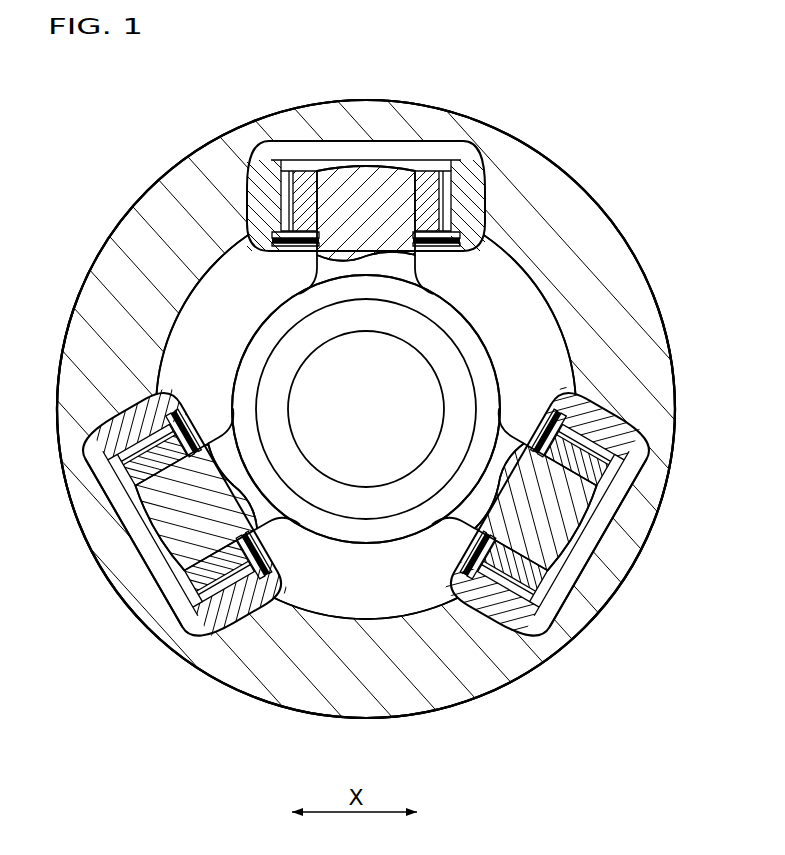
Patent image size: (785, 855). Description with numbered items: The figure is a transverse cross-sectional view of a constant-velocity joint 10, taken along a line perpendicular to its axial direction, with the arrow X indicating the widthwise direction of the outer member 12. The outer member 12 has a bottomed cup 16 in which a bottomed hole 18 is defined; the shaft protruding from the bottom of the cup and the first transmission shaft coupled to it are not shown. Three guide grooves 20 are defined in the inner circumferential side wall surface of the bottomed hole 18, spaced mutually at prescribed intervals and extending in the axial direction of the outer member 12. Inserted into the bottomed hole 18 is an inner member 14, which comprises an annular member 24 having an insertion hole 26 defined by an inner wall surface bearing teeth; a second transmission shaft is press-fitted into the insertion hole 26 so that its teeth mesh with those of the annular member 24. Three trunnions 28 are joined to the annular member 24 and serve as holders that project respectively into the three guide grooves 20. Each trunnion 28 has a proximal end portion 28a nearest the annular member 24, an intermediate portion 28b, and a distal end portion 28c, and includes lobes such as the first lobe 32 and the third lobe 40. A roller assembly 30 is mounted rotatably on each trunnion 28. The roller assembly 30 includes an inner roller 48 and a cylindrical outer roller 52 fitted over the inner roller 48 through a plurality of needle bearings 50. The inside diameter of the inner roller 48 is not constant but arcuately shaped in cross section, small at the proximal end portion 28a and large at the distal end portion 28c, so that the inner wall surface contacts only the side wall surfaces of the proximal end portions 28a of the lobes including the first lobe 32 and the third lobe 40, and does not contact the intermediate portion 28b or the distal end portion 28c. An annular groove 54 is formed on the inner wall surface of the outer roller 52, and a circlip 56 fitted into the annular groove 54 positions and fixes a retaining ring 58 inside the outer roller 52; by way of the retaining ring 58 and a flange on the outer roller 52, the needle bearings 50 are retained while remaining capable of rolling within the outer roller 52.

The constant-velocity joint 10 is at (281, 112).
The outer member 12 is at (380, 720).
The bottomed cup 16 is at (366, 409).
The bottomed hole 18 is at (200, 290).
The inner member 14 is at (483, 324).
The annular member 24 is at (368, 546).
The insertion hole 26 is at (300, 367).
The trunnion 28 is at (335, 196).
The proximal end portion 28a is at (370, 270).
The intermediate portion 28b is at (377, 212).
The distal end portion 28c is at (352, 180).
The guide groove 20 is at (400, 152).
The roller assembly 30 is at (448, 156).
The first lobe 32 is at (297, 203).
The third lobe 40 is at (453, 240).
The inner roller 48 is at (312, 192).
The needle bearing 50 is at (290, 190).
The outer roller 52 is at (484, 180).
The annular groove 54 is at (455, 248).
The circlip 56 is at (306, 250).
The retaining ring 58 is at (438, 252).